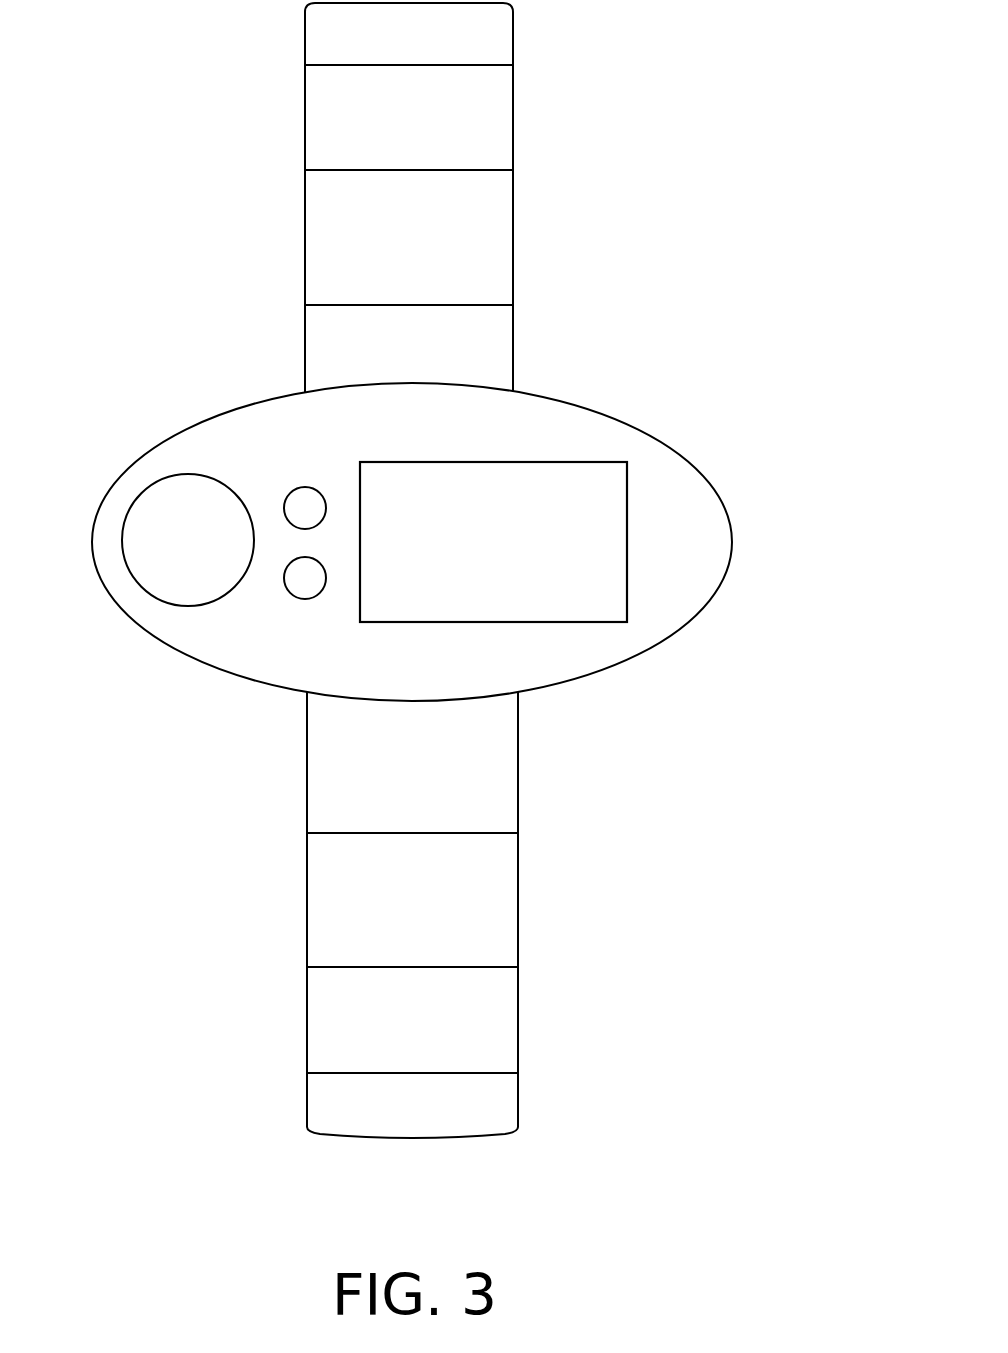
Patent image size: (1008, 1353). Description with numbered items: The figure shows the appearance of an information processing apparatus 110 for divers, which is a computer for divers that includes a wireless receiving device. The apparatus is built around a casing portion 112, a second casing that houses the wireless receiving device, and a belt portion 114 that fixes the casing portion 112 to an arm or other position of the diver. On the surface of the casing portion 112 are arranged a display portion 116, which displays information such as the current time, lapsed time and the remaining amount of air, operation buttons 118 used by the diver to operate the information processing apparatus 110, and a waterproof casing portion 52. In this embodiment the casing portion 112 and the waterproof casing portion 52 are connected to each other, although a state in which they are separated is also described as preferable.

The information processing apparatus 110 is at (802, 898).
The casing portion 112 is at (733, 537).
The belt portion 114 is at (515, 233).
The display portion 116 is at (505, 460).
The operation buttons 118 is at (305, 487).
The waterproof casing portion 52 is at (132, 486).